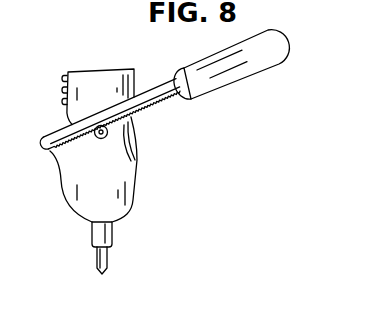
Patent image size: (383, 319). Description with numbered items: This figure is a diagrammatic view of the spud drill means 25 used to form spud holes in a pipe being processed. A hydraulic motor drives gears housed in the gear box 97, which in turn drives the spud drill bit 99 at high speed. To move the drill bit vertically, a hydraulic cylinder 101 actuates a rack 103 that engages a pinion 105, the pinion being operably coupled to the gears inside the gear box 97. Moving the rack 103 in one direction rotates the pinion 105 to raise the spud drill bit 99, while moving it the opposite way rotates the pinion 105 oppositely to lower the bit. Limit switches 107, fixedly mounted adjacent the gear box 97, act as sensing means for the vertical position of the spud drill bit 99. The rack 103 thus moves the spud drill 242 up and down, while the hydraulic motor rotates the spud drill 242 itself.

The spud drill means 25 is at (159, 175).
The gear box 97 is at (107, 88).
The spud drill bit 99 is at (108, 262).
The hydraulic cylinder 101 is at (265, 57).
The rack 103 is at (78, 131).
The pinion 105 is at (108, 132).
The limit switches 107 is at (62, 78).
The spud drill 242 is at (92, 233).